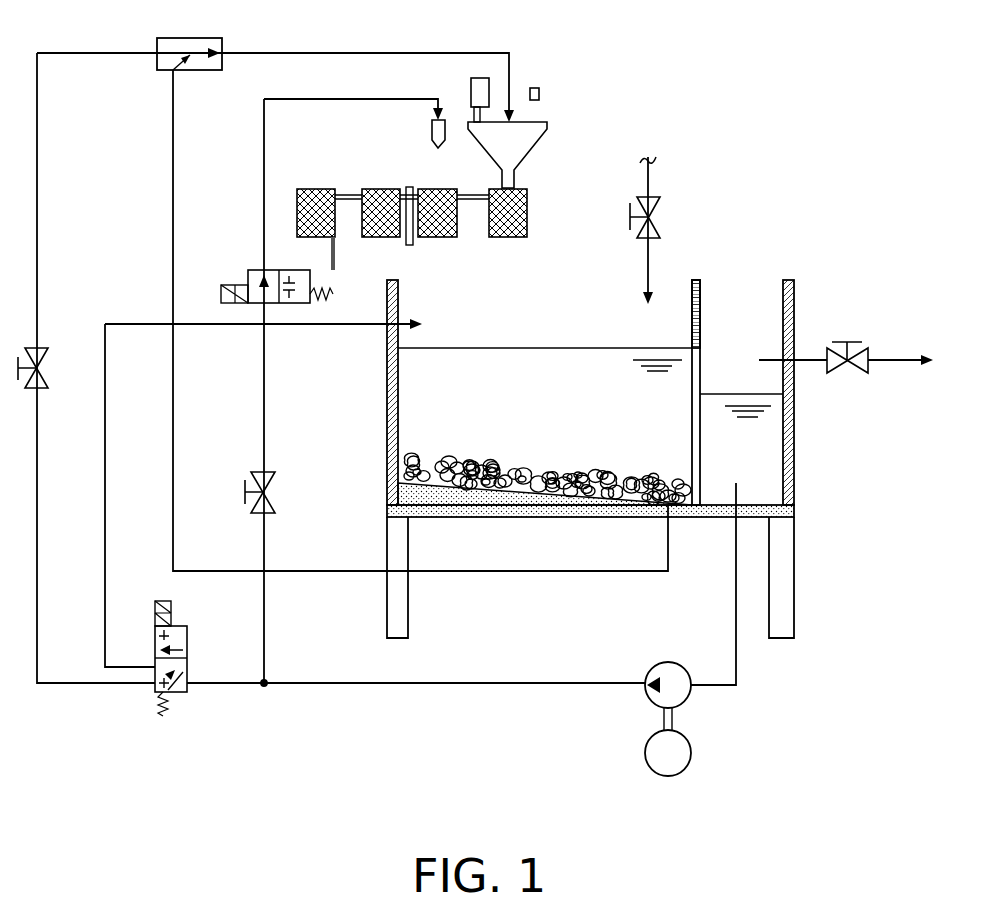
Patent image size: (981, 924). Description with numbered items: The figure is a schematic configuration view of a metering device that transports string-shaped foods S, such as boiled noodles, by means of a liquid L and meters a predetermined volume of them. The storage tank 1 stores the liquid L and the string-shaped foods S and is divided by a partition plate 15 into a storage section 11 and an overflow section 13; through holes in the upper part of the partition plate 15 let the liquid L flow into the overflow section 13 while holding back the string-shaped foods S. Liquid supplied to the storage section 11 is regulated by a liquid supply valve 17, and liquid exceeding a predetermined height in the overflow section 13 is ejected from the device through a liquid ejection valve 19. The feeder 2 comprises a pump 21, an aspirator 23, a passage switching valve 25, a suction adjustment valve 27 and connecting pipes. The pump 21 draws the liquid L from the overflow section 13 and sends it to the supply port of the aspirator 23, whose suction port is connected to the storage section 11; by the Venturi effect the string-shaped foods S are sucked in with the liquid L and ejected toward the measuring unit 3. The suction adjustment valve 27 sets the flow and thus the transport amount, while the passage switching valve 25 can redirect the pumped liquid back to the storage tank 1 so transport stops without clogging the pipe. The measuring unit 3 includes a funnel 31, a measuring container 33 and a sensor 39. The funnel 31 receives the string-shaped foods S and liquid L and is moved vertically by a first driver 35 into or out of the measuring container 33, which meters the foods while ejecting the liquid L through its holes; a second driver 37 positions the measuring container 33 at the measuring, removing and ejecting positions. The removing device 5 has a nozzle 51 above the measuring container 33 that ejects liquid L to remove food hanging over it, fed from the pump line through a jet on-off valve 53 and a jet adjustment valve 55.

The storage tank 1 is at (630, 405).
The feeder 2 is at (740, 719).
The measuring unit 3 is at (486, 156).
The removing device 5 is at (319, 303).
The storage section 11 is at (580, 292).
The overflow section 13 is at (762, 278).
The partition plate 15 is at (703, 280).
The liquid supply valve 17 is at (654, 196).
The liquid ejection valve 19 is at (868, 358).
The pump 21 is at (761, 708).
The aspirator 23 is at (220, 42).
The passage switching valve 25 is at (186, 625).
The suction adjustment valve 27 is at (40, 348).
The funnel 31 is at (542, 133).
The measuring container 33 is at (529, 209).
The first driver 35 is at (471, 91).
The second driver 37 is at (412, 245).
The sensor 39 is at (541, 91).
The nozzle 51 is at (432, 129).
The jet on-off valve 53 is at (248, 270).
The jet adjustment valve 55 is at (279, 475).
The string-shaped foods S is at (424, 462).
The liquid L is at (770, 433).